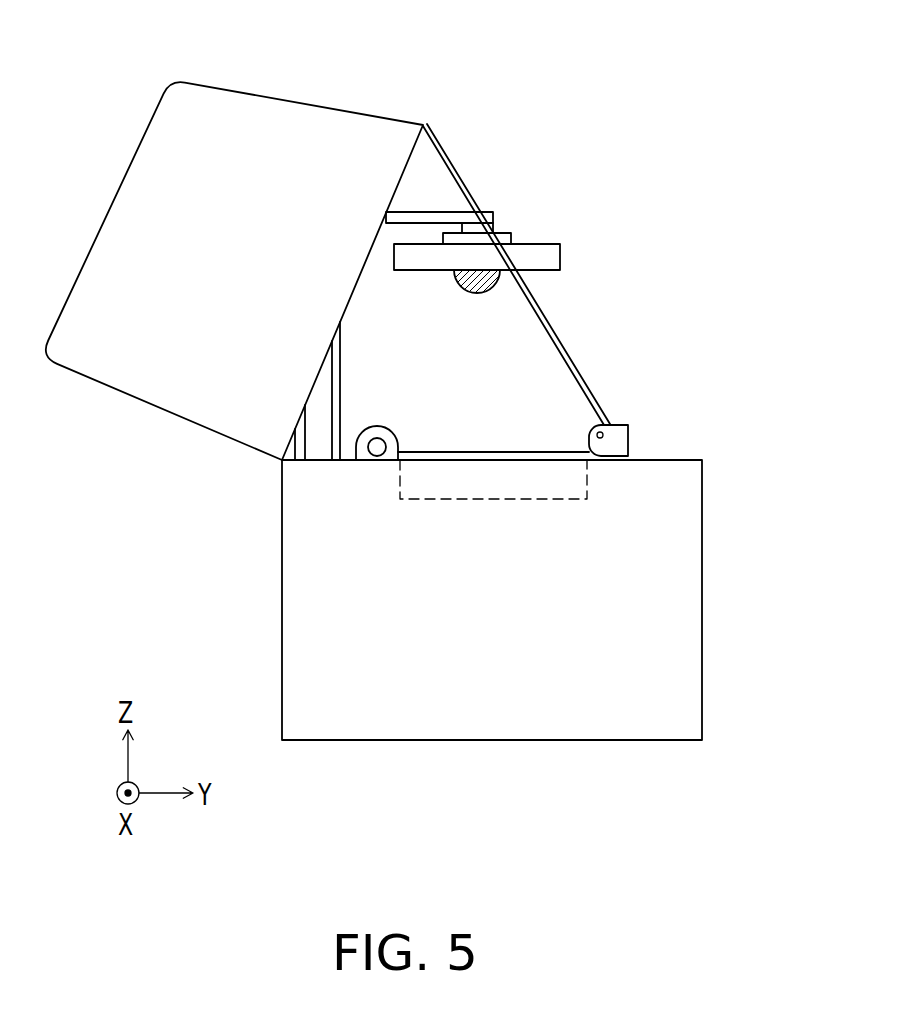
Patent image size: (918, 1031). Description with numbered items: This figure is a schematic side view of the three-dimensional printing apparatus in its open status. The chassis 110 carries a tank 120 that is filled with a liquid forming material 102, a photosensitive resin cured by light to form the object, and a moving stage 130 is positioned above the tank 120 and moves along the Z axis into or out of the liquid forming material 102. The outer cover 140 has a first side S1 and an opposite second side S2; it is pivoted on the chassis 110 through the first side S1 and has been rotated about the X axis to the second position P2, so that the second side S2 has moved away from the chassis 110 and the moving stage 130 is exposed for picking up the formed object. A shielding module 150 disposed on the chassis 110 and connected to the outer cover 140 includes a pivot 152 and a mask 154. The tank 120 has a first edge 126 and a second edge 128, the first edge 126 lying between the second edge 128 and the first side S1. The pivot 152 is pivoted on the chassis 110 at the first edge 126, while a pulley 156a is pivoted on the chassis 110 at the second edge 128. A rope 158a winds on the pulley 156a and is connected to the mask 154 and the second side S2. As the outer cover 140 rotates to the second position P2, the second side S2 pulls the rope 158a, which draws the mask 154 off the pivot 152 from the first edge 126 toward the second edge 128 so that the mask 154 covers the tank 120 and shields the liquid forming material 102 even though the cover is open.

The liquid forming material 102 is at (555, 480).
The chassis 110 is at (692, 603).
The tank 120 is at (563, 500).
The first edge 126 is at (373, 468).
The second edge 128 is at (625, 466).
The moving stage 130 is at (553, 253).
The outer cover 140 is at (312, 123).
The shielding module 150 is at (480, 282).
The pivot 152 is at (377, 447).
The mask 154 is at (430, 458).
The pulley 156a is at (617, 423).
The rope 158a is at (562, 343).
The second position P2 is at (237, 75).
The first side S1 is at (253, 450).
The second side S2 is at (390, 120).